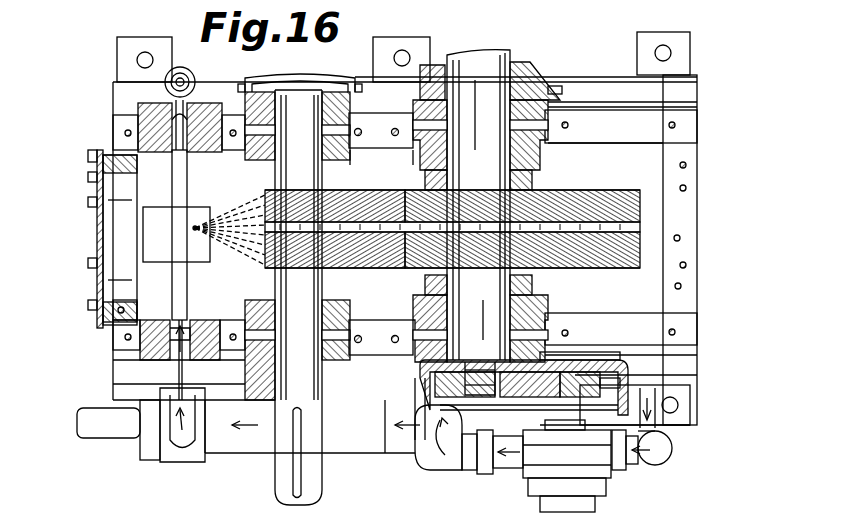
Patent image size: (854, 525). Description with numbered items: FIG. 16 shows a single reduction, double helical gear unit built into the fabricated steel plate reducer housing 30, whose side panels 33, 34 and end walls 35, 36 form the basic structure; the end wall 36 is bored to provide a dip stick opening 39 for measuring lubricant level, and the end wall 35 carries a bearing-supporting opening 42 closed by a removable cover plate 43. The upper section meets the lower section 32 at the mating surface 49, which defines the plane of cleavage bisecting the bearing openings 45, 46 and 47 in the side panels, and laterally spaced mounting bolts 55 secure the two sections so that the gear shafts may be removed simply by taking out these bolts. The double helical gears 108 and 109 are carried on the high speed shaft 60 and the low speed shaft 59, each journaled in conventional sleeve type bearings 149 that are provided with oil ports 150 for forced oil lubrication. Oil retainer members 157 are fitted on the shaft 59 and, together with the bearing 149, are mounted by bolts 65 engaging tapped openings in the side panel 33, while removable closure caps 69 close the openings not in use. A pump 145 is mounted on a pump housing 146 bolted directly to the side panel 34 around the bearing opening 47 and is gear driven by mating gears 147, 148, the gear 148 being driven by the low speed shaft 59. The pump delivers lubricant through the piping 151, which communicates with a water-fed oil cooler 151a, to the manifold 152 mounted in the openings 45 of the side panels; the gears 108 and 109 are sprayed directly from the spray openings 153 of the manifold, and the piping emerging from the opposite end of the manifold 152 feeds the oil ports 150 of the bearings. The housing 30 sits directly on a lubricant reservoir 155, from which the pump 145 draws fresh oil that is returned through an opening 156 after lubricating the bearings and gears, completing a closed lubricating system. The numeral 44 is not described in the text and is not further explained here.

The reducer housing 30 is at (603, 70).
The lower section 32 is at (684, 118).
The side panel 33 is at (688, 128).
The side panel 34 is at (688, 333).
The end wall 35 is at (110, 316).
The end wall 36 is at (694, 286).
The dip stick opening 39 is at (682, 238).
The bearing-supporting opening 42 is at (113, 155).
The cover plate 43 is at (97, 228).
The plate bolt 44 is at (97, 300).
The bearing opening 45 is at (140, 118).
The bearing opening 46 is at (250, 152).
The bearing opening 47 is at (418, 148).
The mating surface 49 is at (645, 125).
The mounting bolts 55 is at (688, 186).
The low speed shaft 59 is at (507, 55).
The high speed shaft 60 is at (268, 282).
The mounting bolts 65 is at (562, 88).
The closure caps 69 is at (328, 76).
The double helical gear 108 is at (266, 200).
The low speed double helical gear 109 is at (622, 196).
The pump 145 is at (545, 506).
The pump housing 146 is at (420, 400).
The pump drive gear 147 is at (612, 384).
The pump drive gear 148 is at (478, 392).
The sleeve type bearings 149 is at (555, 160).
The oil ports 150 is at (410, 124).
The piping 151 is at (512, 462).
The oil cooler 151a is at (396, 442).
The manifold 152 is at (180, 283).
The spray openings 153 is at (195, 218).
The lubricant reservoir 155 is at (155, 230).
The opening 156 is at (153, 210).
The oil retainer members 157 is at (549, 74).